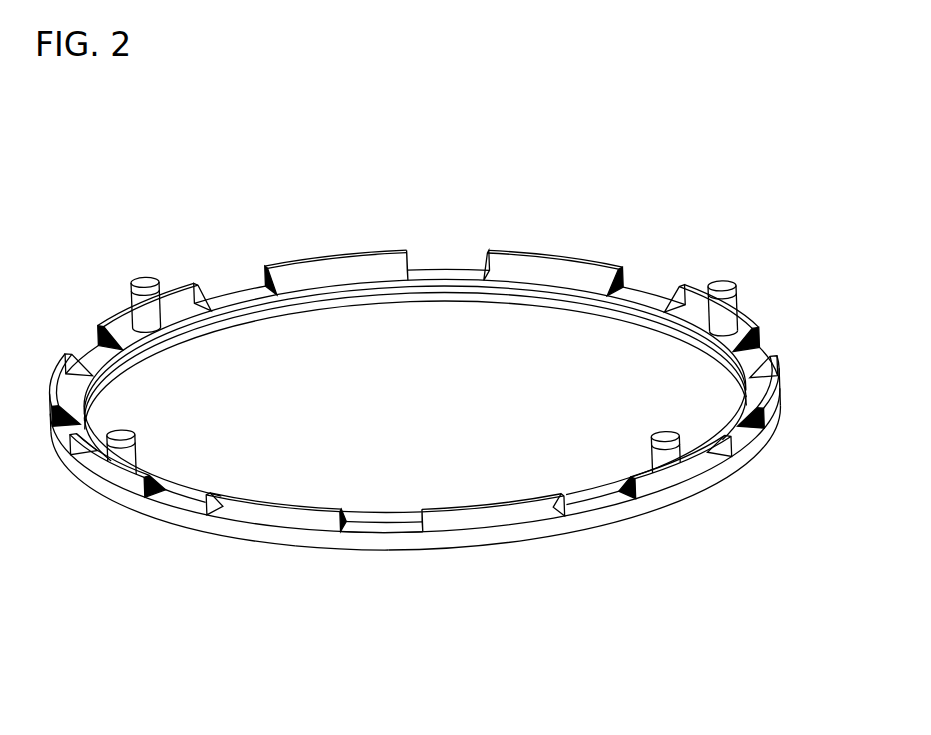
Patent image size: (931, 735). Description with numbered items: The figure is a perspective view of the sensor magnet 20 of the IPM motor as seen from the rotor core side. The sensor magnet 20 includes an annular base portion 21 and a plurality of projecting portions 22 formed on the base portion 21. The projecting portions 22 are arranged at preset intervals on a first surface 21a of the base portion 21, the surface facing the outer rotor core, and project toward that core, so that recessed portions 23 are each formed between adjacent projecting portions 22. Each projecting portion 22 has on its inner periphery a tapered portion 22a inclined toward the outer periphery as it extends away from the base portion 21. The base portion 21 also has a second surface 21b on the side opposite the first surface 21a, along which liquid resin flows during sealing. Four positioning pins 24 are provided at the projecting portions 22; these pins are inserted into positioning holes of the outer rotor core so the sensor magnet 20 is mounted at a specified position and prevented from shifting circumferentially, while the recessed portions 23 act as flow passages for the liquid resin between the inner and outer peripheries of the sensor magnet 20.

The sensor magnet 20 is at (163, 581).
The base portion 21 is at (390, 550).
The first surface 21a is at (388, 518).
The second surface 21b is at (345, 550).
The projecting portion 22 is at (328, 257).
The tapered portion 22a is at (380, 268).
The recessed portion 23 is at (237, 290).
The positioning pin 24 is at (147, 282).